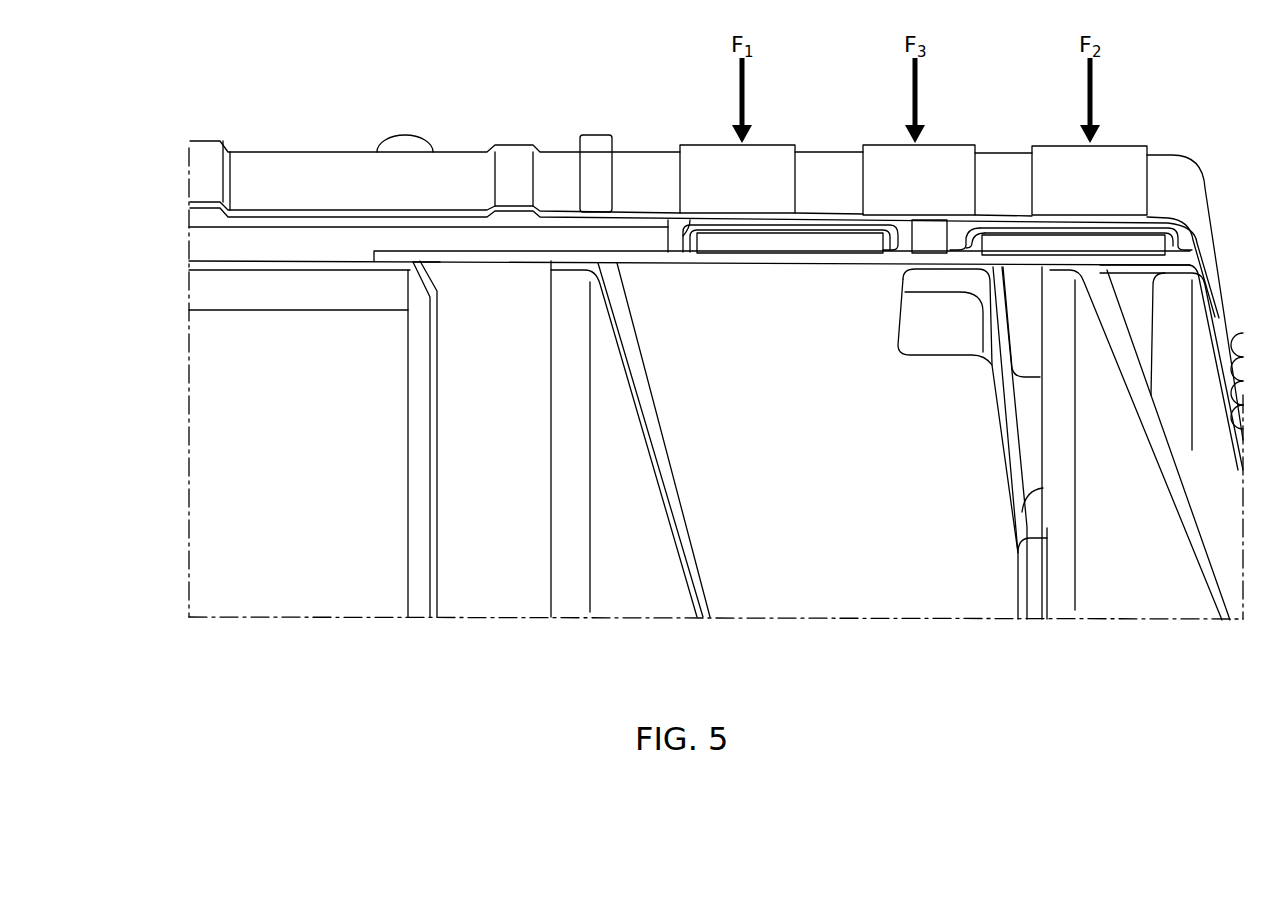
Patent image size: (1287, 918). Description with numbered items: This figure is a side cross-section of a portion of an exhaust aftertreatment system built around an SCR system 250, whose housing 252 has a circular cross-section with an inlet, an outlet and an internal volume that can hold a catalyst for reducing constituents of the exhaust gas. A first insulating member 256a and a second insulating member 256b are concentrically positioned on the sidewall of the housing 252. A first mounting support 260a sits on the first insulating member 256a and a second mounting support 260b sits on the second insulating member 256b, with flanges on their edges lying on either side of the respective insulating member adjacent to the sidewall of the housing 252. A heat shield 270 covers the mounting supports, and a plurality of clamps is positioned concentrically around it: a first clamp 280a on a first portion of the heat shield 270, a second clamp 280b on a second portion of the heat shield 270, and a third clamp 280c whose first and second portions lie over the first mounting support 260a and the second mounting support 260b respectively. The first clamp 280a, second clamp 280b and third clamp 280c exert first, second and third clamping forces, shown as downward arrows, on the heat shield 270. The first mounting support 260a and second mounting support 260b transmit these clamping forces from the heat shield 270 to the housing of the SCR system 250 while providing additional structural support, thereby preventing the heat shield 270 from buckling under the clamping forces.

The SCR system 250 is at (485, 605).
The housing 252 is at (352, 240).
The heat shield 270 is at (515, 160).
The first clamp 280a is at (703, 143).
The second clamp 280b is at (1130, 145).
The third clamp 280c is at (943, 152).
The first mounting support 260a is at (1013, 225).
The second mounting support 260b is at (835, 222).
The first insulating member 256a is at (1068, 248).
The second insulating member 256b is at (712, 243).